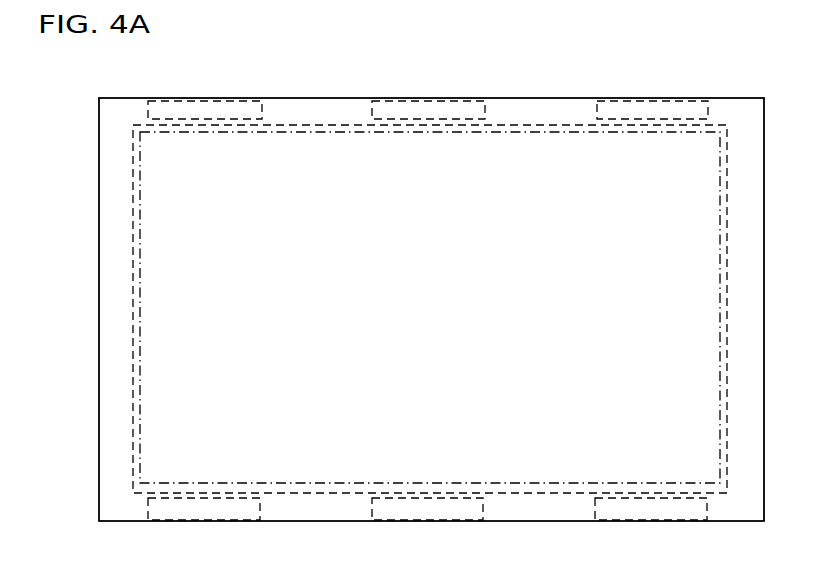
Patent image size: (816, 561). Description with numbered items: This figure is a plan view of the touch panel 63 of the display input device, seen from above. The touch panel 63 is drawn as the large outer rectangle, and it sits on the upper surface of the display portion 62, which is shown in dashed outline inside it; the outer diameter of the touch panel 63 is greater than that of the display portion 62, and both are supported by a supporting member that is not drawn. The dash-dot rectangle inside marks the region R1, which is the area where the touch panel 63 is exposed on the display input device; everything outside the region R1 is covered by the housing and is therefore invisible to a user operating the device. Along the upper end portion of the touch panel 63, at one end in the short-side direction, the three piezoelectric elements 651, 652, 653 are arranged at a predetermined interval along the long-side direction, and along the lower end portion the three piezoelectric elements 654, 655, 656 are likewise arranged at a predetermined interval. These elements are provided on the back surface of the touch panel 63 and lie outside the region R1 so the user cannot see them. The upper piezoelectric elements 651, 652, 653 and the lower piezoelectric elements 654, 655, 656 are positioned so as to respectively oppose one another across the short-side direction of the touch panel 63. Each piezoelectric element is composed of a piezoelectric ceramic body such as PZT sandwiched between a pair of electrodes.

The display portion 62 is at (512, 123).
The touch panel 63 is at (567, 98).
The region R1 is at (338, 132).
The piezoelectric element 651 is at (225, 120).
The piezoelectric element 652 is at (453, 122).
The piezoelectric element 653 is at (680, 122).
The piezoelectric element 654 is at (227, 493).
The piezoelectric element 655 is at (457, 493).
The piezoelectric element 656 is at (682, 493).